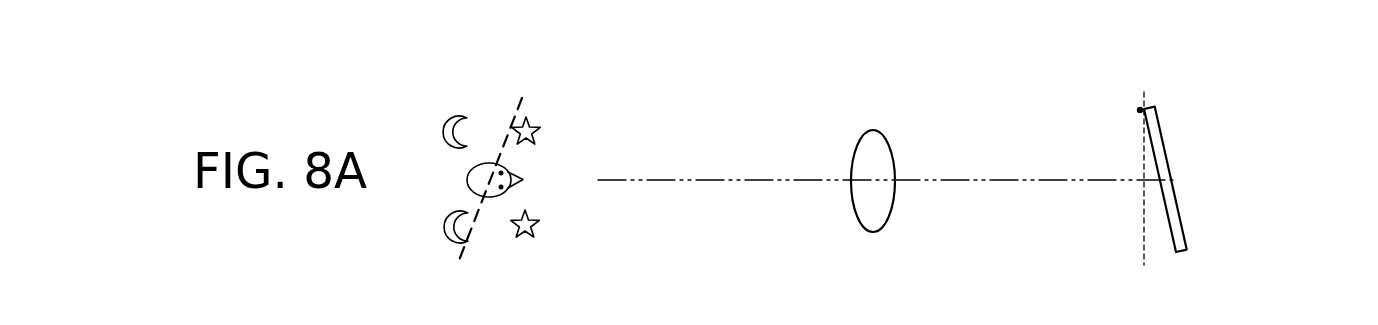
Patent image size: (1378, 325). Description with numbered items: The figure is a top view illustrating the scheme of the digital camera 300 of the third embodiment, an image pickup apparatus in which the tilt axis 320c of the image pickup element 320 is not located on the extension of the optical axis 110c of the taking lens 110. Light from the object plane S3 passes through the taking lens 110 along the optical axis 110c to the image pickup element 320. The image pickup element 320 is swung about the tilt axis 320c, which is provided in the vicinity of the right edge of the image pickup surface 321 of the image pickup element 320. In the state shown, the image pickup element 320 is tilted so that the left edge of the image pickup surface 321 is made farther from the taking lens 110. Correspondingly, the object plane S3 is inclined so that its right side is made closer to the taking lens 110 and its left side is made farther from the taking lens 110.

The object plane S3 is at (526, 102).
The taking lens 110 is at (884, 130).
The optical axis 110c is at (997, 178).
The digital camera 300 is at (1245, 76).
The image pickup element 320 is at (1185, 227).
The tilt axis 320c is at (1140, 107).
The image pickup surface 321 is at (1160, 198).